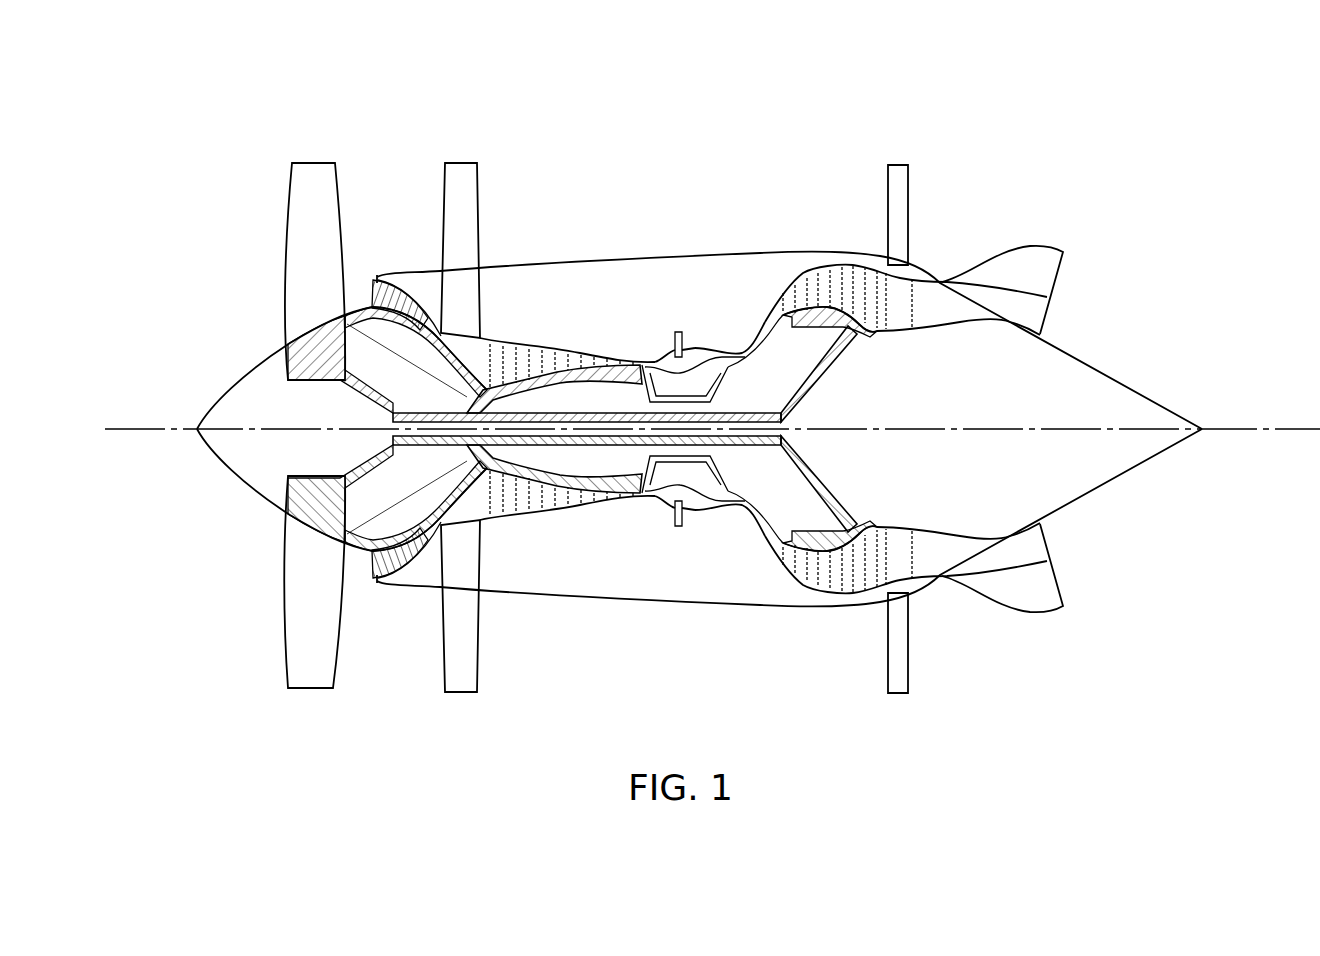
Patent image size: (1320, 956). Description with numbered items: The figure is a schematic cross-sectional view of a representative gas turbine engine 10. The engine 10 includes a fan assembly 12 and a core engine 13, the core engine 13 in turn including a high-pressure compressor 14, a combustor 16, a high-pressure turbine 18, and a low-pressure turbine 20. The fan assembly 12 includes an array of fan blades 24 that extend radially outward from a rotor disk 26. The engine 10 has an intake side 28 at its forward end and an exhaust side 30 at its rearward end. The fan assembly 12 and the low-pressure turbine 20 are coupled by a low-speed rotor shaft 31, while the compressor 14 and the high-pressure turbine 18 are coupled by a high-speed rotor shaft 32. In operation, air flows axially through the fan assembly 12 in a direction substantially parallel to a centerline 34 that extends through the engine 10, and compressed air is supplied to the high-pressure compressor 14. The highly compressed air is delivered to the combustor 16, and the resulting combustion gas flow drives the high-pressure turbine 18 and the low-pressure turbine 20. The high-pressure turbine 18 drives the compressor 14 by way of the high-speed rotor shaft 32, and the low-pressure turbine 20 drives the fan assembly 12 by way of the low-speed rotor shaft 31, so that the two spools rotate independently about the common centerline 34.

The gas turbine engine 10 is at (1176, 108).
The fan assembly 12 is at (338, 150).
The core engine 13 is at (660, 332).
The high-pressure compressor 14 is at (496, 336).
The combustor 16 is at (691, 327).
The high-pressure turbine 18 is at (734, 539).
The low-pressure turbine 20 is at (813, 593).
The fan blades 24 is at (328, 237).
The rotor disk 26 is at (263, 541).
The intake side 28 is at (263, 664).
The exhaust side 30 is at (1081, 275).
The low-speed rotor shaft 31 is at (572, 443).
The high-speed rotor shaft 32 is at (551, 480).
The centerline 34 is at (1263, 426).